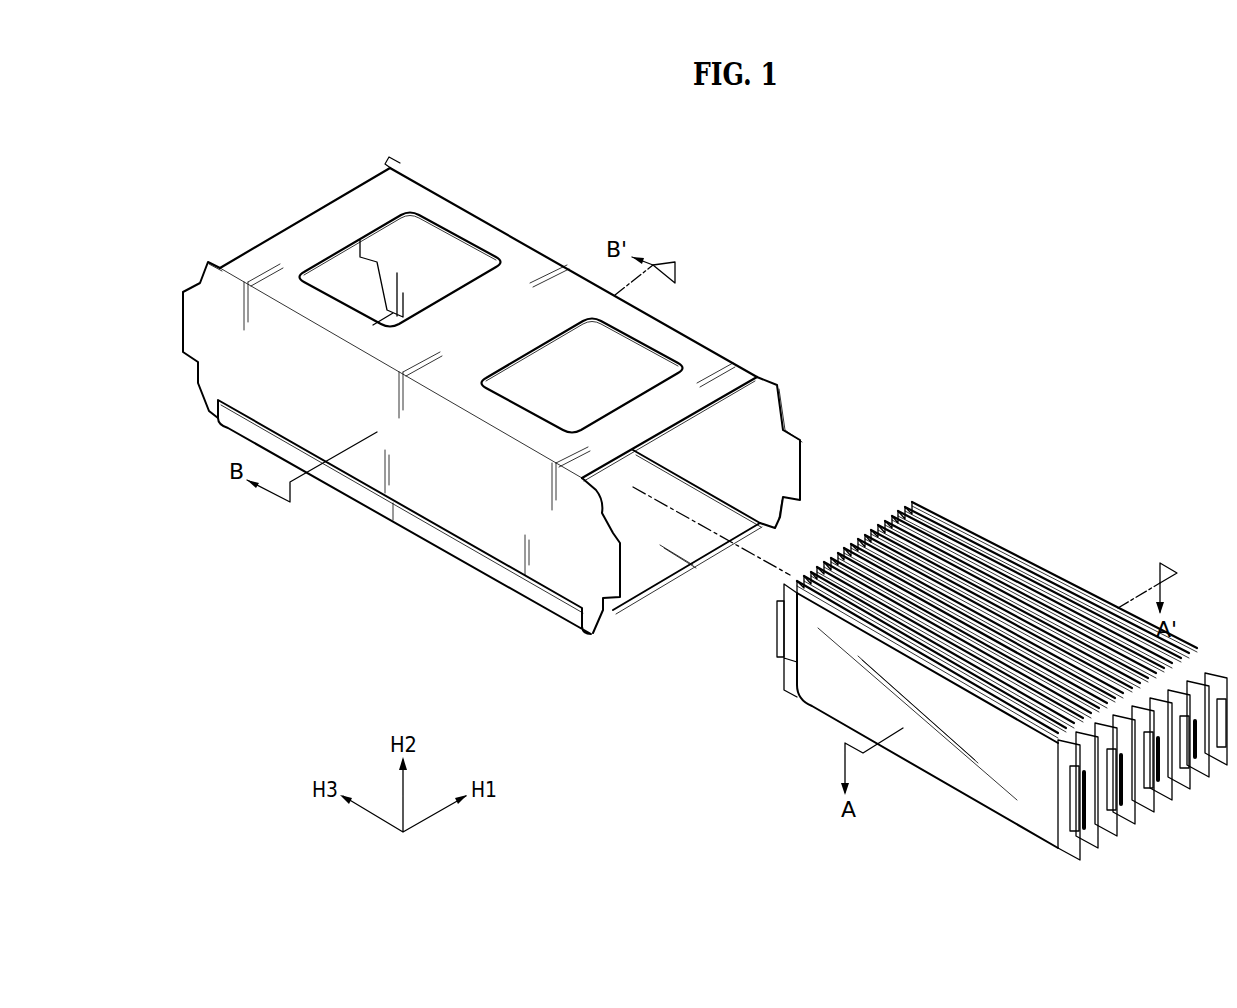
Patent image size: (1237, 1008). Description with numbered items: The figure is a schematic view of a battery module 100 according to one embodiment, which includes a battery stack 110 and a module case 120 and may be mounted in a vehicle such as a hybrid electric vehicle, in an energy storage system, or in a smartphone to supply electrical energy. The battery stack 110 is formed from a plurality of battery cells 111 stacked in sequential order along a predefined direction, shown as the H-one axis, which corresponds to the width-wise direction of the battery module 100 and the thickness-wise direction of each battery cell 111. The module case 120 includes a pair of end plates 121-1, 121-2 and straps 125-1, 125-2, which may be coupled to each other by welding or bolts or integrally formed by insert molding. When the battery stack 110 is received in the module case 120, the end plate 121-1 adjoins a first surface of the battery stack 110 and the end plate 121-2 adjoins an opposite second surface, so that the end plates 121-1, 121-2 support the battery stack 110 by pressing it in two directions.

The battery module 100 is at (996, 212).
The battery stack 110 is at (1029, 540).
The battery cell 111 is at (984, 785).
The case 120 is at (694, 230).
The end plate 121-1 is at (450, 504).
The end plate 121-2 is at (764, 413).
The strap 125-1 is at (528, 257).
The strap 125-2 is at (644, 572).